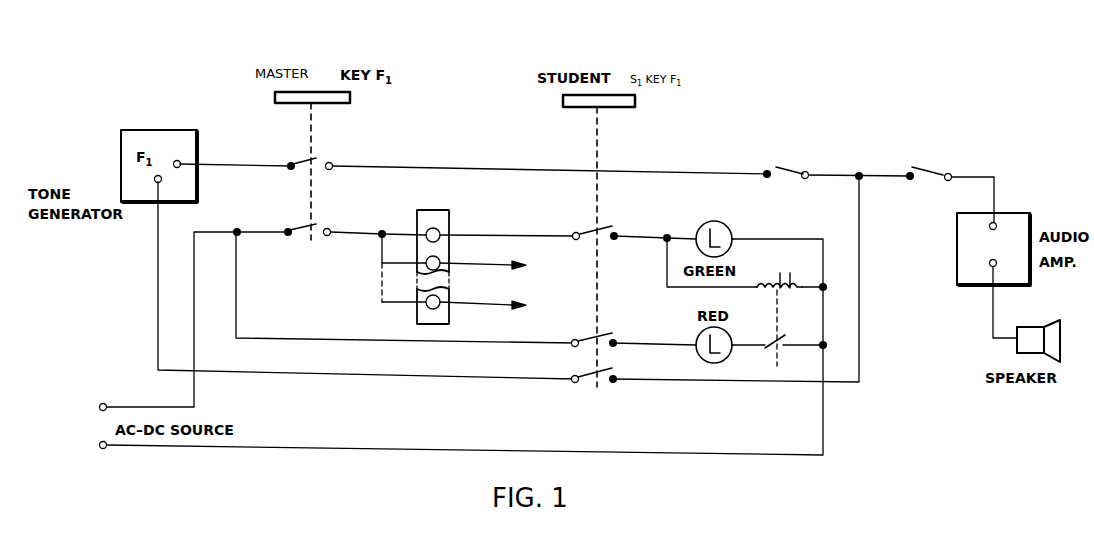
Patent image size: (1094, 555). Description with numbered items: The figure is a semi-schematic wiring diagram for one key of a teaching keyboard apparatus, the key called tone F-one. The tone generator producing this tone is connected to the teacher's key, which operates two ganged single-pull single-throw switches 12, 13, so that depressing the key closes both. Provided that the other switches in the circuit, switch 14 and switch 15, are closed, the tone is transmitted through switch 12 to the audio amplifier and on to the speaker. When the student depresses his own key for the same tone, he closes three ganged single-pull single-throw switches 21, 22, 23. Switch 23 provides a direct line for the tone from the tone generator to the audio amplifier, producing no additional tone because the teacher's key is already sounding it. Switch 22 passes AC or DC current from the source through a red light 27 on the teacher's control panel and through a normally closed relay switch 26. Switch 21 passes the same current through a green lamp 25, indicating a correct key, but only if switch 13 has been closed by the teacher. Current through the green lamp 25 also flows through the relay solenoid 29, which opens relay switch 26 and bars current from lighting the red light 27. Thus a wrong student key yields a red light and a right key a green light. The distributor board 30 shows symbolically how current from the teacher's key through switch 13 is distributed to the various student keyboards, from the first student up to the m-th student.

The single-pull single-throw switch 12 is at (300, 157).
The single-pull single-throw switch 13 is at (300, 223).
The switch 14 is at (778, 166).
The switch 15 is at (920, 167).
The single-pull single-throw switch 21 is at (583, 232).
The single-pull single-throw switch 22 is at (587, 337).
The single-pull single-throw switch 23 is at (587, 374).
The green lamp 25 is at (720, 224).
The relay switch 26 is at (767, 347).
The red light 27 is at (698, 352).
The relay solenoid 29 is at (780, 272).
The distributor board 30 is at (430, 210).